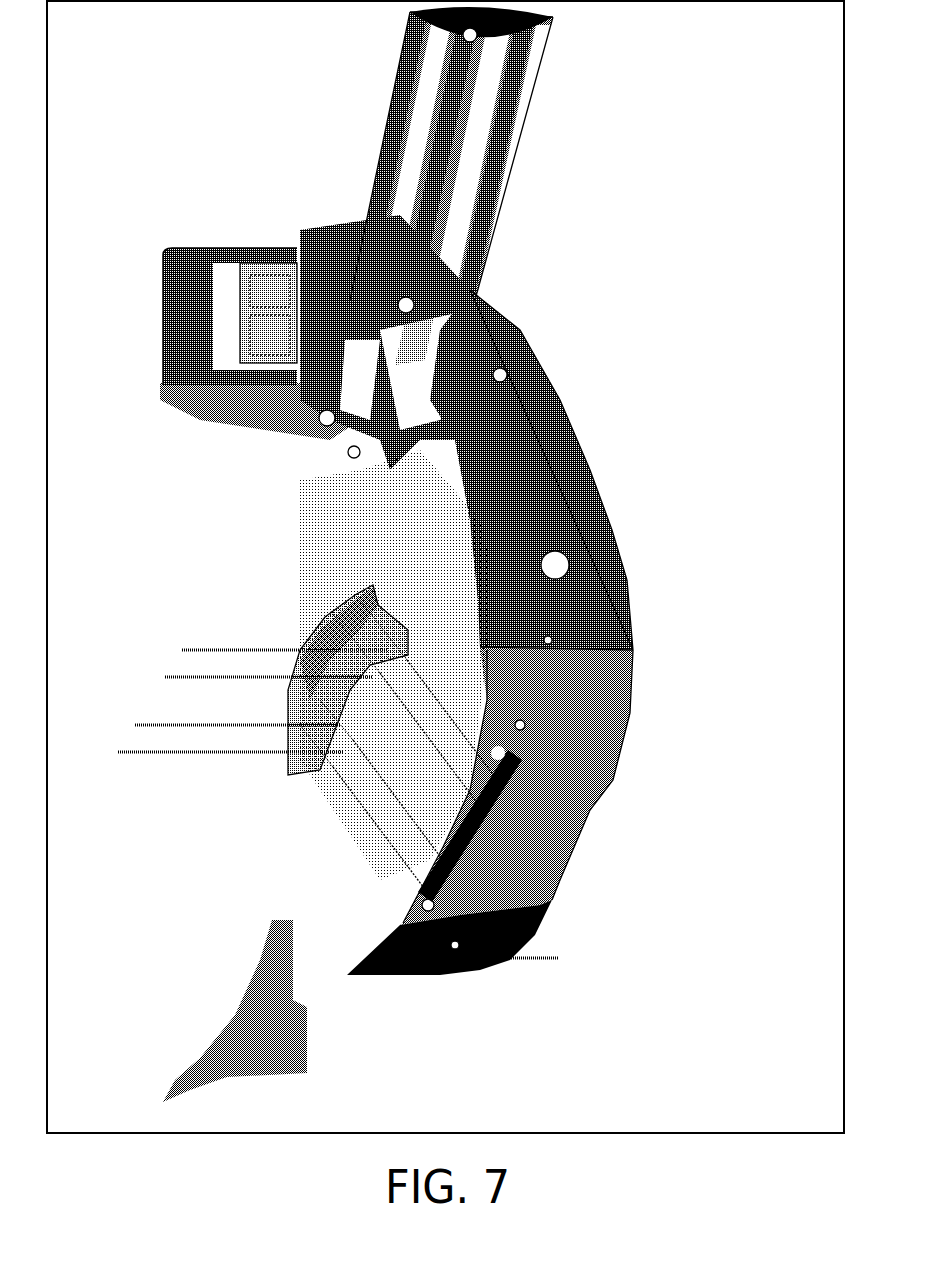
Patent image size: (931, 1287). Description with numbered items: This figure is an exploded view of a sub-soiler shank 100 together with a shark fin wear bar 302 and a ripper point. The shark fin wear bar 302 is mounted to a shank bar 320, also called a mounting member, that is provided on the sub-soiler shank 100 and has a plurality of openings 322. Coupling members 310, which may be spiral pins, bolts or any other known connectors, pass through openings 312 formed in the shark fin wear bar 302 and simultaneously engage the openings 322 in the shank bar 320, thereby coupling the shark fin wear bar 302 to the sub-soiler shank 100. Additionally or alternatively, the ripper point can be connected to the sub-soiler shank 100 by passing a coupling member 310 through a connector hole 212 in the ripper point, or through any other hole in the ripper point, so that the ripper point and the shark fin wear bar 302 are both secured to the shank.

The sub-soiler shank 100 is at (623, 563).
The connector hole 212 is at (297, 1055).
The shark fin wear bar 302 is at (320, 630).
The coupling members 310 is at (165, 675).
The openings 312 is at (377, 670).
The shank bar 320 is at (427, 890).
The openings 322 is at (443, 850).